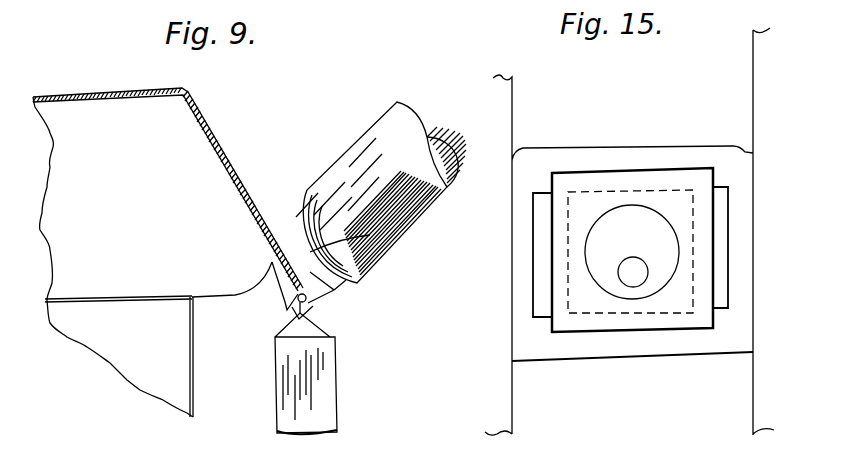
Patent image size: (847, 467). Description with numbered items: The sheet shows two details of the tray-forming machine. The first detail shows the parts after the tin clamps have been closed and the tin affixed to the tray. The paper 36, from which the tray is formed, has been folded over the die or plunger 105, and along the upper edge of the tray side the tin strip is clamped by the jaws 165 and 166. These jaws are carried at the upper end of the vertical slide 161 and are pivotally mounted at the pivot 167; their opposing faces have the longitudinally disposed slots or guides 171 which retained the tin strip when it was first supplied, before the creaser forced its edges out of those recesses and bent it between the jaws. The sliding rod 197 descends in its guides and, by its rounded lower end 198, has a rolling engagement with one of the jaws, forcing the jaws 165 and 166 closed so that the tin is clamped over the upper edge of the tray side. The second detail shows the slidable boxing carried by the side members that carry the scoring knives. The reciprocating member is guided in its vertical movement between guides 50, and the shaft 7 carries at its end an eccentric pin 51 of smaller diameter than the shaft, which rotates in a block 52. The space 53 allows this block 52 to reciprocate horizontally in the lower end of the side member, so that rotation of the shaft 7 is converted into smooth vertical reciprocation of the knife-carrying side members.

In FIG. 9, the paper 36 is at (129, 90).
In FIG. 9, the die or plunger 105 is at (152, 257).
In FIG. 9, the slots or guides 171 is at (288, 248).
In FIG. 9, the sliding rod 197 is at (403, 125).
In FIG. 9, the rounded lower end 198 is at (370, 235).
In FIG. 9, the jaw 165 is at (340, 285).
In FIG. 9, the jaw 166 is at (280, 292).
In FIG. 9, the pivot 167 is at (313, 308).
In FIG. 9, the vertical slide 161 is at (323, 395).
In FIG. 15, the guides 50 is at (500, 128).
In FIG. 15, the eccentric pins 51 is at (633, 217).
In FIG. 15, the shaft 7 is at (636, 258).
In FIG. 15, the space 53 is at (543, 256).
In FIG. 15, the blocks 52 is at (600, 328).